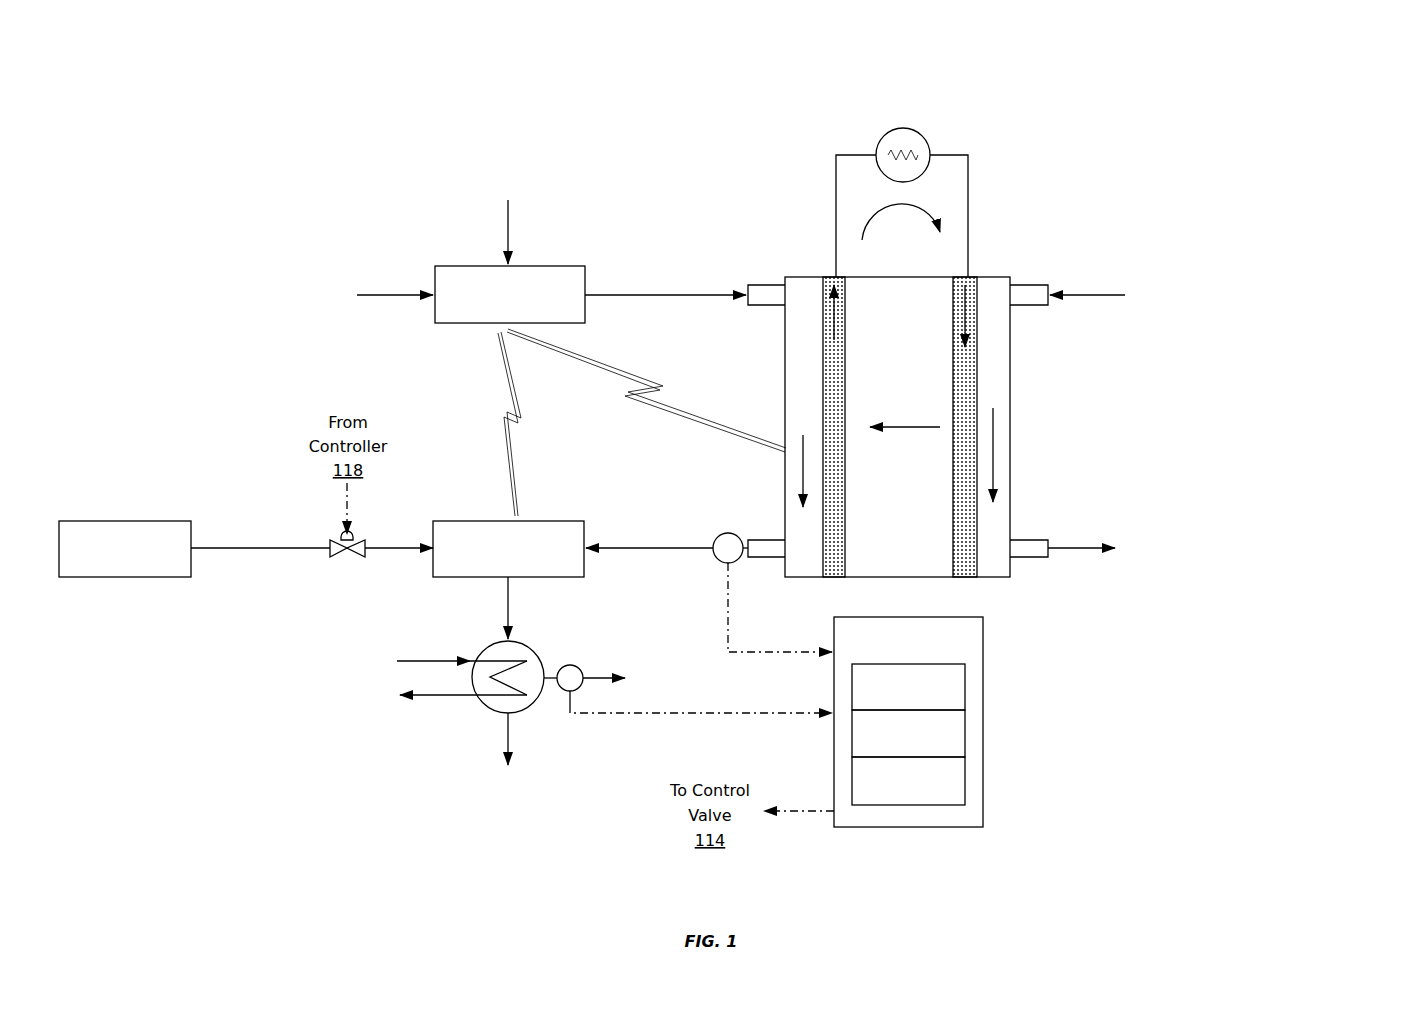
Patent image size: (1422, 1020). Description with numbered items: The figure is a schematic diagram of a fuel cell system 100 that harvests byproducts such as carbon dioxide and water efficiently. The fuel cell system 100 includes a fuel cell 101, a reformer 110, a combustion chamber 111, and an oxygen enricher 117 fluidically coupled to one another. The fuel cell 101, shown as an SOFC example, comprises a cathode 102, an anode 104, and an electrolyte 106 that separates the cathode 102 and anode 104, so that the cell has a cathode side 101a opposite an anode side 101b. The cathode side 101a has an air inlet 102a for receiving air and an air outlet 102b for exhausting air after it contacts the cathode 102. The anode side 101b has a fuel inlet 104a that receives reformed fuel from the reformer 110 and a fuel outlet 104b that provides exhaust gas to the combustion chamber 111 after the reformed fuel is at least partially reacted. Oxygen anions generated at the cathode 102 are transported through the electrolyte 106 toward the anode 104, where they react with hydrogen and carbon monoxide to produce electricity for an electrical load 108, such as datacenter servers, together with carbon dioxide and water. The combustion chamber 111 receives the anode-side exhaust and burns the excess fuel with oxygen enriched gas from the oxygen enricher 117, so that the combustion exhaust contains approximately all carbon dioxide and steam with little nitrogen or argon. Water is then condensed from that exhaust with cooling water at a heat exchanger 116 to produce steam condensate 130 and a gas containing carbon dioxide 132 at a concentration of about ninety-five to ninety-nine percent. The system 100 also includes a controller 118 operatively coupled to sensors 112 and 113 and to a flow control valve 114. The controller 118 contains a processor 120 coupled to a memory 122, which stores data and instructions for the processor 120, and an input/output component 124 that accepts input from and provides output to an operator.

The fuel cell system 100 is at (1290, 146).
The fuel cell 101 is at (1152, 394).
The cathode side 101a is at (1020, 412).
The anode side 101b is at (778, 398).
The cathode 102 is at (977, 277).
The air inlet 102a is at (1048, 285).
The air outlet 102b is at (1030, 540).
The anode 104 is at (823, 277).
The fuel inlet 104a is at (748, 285).
The fuel outlet 104b is at (770, 540).
The electrolyte 106 is at (900, 456).
The electrical load 108 is at (902, 176).
The reformer 110 is at (547, 347).
The combustion chamber 111 is at (470, 521).
The sensor 112 is at (718, 537).
The sensor 113 is at (575, 665).
The flow control valve 114 is at (343, 533).
The heat exchanger 116 is at (480, 650).
The oxygen enricher 117 is at (105, 521).
The controller 118 is at (983, 635).
The processor 120 is at (965, 688).
The memory 122 is at (965, 735).
The input/output component 124 is at (965, 780).
The steam condensate 130 is at (508, 807).
The carbon dioxide 132 is at (628, 680).